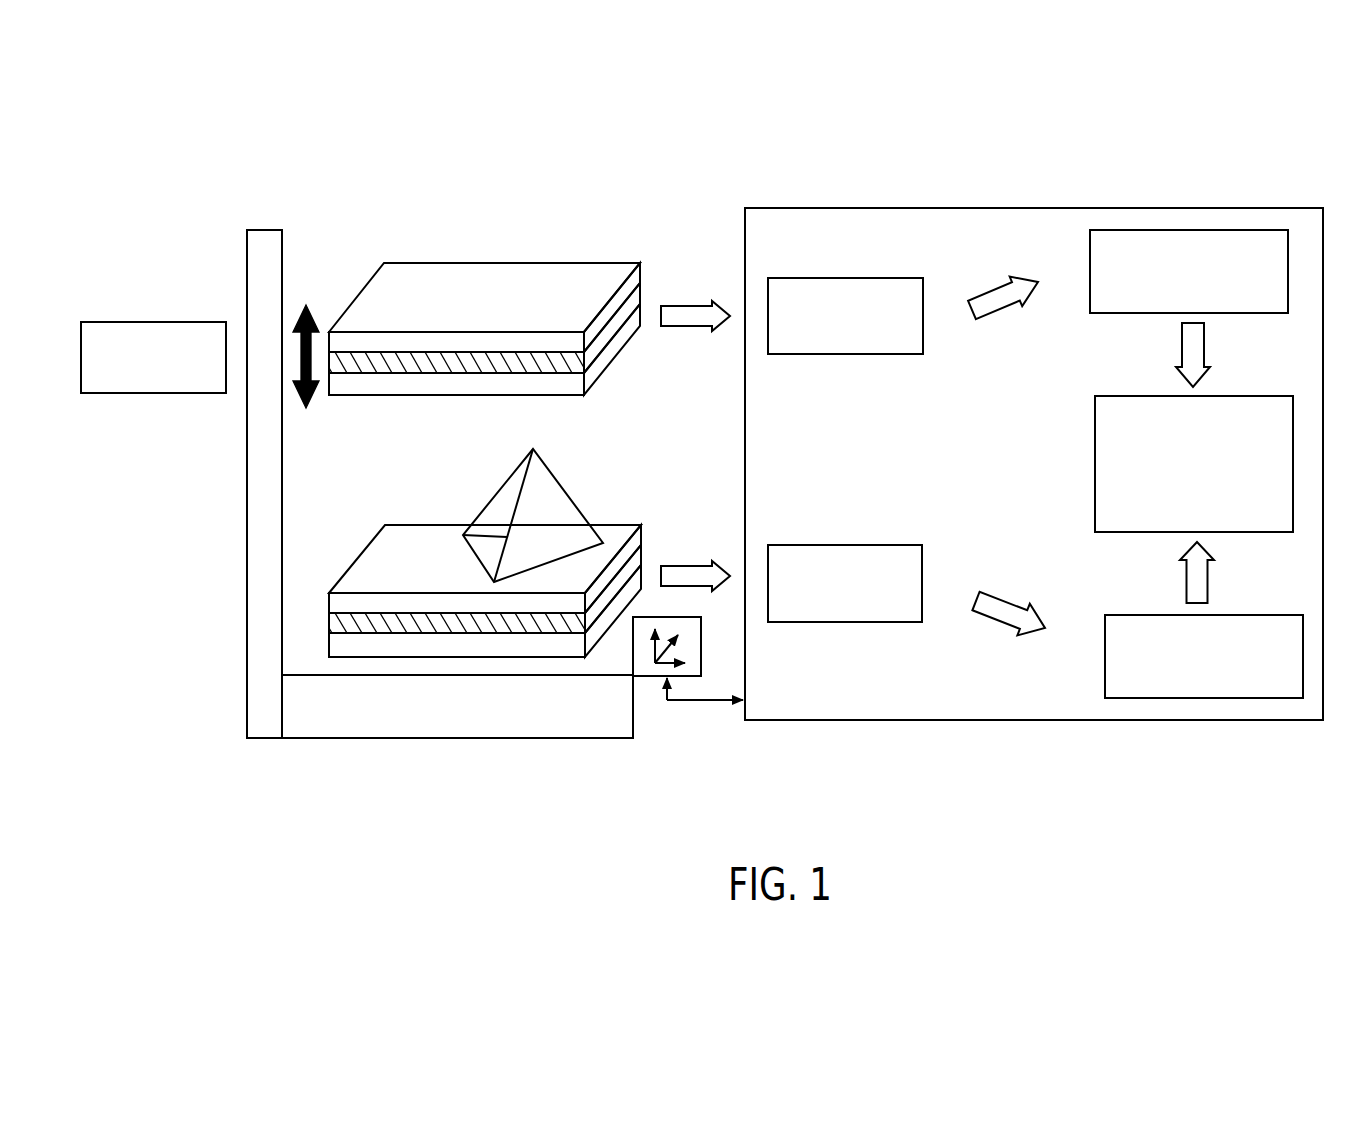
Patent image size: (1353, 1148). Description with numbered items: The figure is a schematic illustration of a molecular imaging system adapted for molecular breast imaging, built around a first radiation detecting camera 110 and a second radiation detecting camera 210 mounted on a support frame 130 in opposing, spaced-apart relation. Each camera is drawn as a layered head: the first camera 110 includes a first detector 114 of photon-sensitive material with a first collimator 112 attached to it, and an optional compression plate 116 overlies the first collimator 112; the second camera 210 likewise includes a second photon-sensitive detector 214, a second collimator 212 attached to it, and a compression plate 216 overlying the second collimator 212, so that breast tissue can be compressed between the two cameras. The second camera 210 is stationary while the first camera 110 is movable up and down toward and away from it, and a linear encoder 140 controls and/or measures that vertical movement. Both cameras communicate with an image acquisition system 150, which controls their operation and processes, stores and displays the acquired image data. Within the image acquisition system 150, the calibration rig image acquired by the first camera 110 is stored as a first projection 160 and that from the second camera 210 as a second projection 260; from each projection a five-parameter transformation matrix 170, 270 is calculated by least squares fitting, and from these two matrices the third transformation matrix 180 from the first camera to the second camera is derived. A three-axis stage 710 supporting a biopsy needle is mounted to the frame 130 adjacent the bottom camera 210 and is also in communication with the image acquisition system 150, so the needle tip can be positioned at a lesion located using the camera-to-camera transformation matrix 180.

The first radiation detecting camera 110 is at (484, 305).
The first collimator 112 is at (618, 322).
The first detector 114 is at (557, 263).
The compression plate 116 is at (600, 367).
The support frame 130 is at (494, 493).
The linear encoder 140 is at (152, 322).
The image acquisition system 150 is at (1034, 462).
The first projection 160 is at (845, 278).
The transformation matrix 170 is at (1188, 230).
The third transformation matrix 180 is at (1095, 463).
The second radiation detecting camera 210 is at (509, 633).
The second collimator 212 is at (632, 570).
The second photon-sensitive detector 214 is at (483, 645).
The compression plate 216 is at (610, 525).
The second projection 260 is at (845, 622).
The transformation matrix 270 is at (1153, 698).
The three-axis stage 710 is at (648, 678).